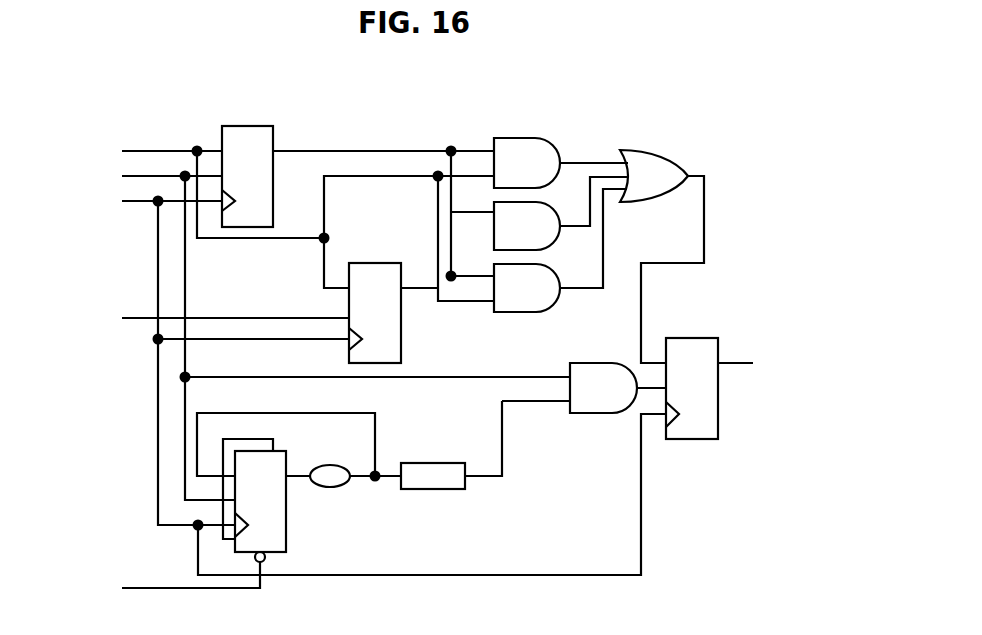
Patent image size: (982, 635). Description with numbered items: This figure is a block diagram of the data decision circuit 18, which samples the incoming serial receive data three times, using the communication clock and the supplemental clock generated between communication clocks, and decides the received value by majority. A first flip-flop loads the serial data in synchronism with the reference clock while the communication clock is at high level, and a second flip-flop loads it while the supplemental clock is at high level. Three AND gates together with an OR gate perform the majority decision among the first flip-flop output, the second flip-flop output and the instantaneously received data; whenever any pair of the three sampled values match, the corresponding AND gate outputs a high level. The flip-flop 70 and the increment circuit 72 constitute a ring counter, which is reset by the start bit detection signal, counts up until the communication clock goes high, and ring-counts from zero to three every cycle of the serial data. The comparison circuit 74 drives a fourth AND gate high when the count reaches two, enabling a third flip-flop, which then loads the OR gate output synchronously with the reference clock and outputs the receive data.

The data decision circuit 18 is at (345, 106).
The flip-flop 70 is at (287, 522).
The increment circuit 72 is at (343, 463).
The comparison circuit 74 is at (451, 445).